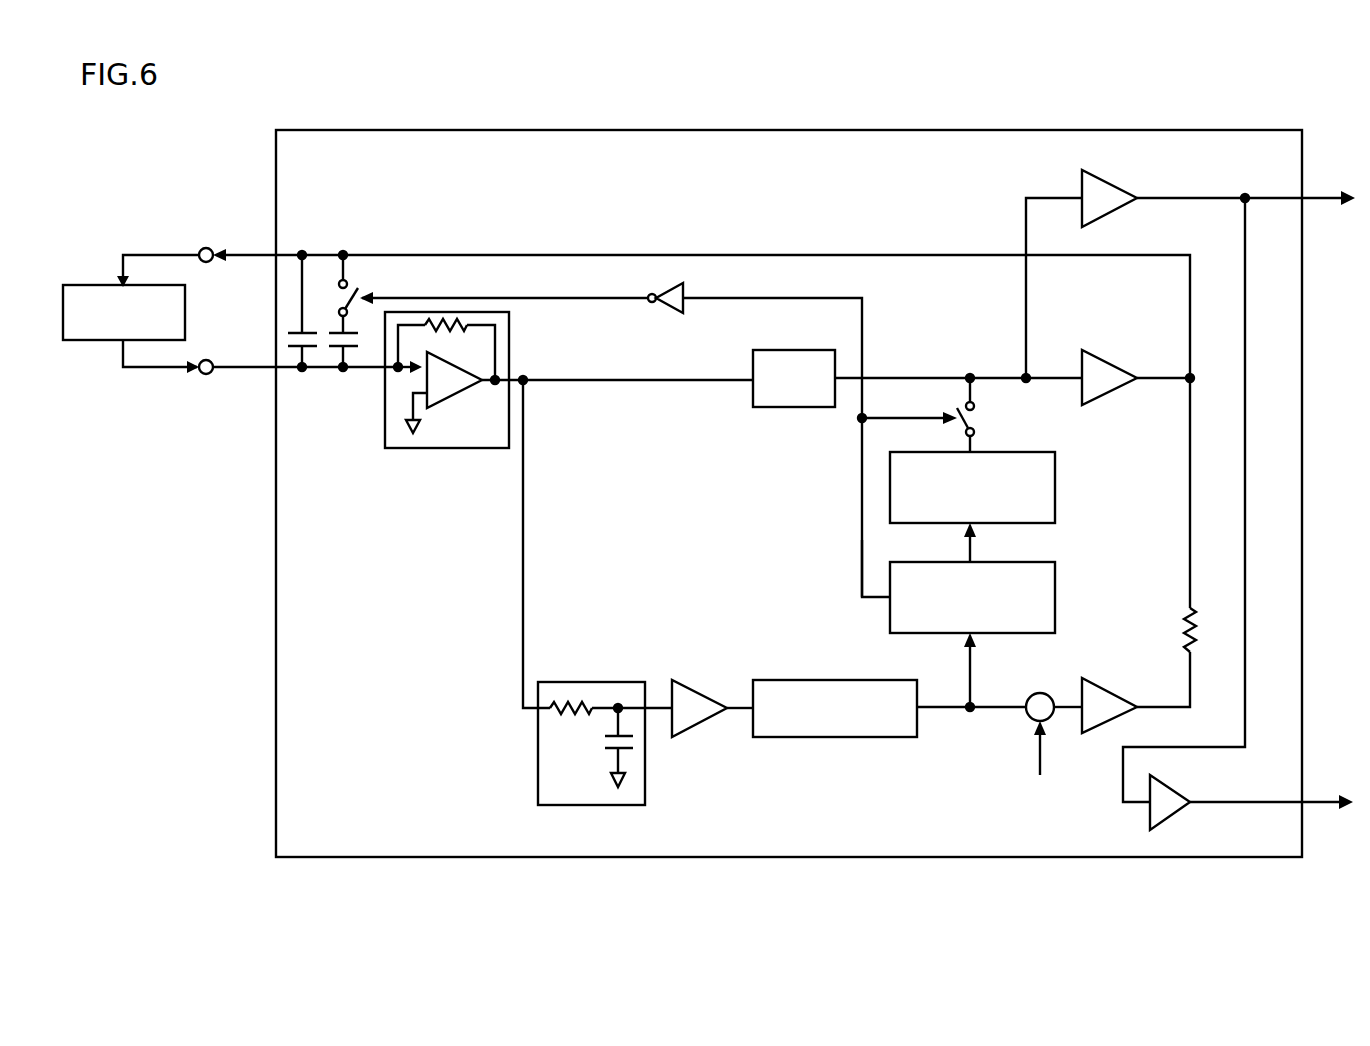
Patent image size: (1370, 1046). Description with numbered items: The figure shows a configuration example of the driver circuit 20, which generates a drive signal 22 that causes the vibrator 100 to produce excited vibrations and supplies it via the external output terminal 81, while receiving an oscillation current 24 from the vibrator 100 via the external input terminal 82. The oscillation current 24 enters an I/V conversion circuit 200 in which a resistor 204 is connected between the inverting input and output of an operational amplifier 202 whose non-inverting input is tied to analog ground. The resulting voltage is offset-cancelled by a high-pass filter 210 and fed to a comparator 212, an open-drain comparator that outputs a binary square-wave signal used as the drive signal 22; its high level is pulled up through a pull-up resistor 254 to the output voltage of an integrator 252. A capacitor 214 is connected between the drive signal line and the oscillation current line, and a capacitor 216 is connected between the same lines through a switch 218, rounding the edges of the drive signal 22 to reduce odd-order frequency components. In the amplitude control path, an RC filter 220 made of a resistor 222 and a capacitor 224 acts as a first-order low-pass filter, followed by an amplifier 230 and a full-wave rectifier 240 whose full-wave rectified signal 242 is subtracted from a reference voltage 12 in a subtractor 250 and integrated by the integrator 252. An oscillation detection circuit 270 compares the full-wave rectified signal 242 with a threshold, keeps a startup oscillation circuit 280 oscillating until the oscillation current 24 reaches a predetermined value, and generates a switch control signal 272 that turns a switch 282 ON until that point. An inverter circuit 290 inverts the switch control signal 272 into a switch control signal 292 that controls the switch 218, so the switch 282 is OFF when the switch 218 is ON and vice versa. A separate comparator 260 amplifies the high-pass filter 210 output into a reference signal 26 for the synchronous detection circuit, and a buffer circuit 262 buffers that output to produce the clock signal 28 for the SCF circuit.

The reference voltage 12 is at (1042, 757).
The driver circuit 20 is at (1115, 130).
The drive signal 22 is at (255, 255).
The oscillation current 24 is at (255, 366).
The reference signal 26 is at (1313, 198).
The clock signal 28 is at (1313, 802).
The external output terminal 81 is at (205, 248).
The external input terminal 82 is at (208, 360).
The vibrator 100 is at (186, 313).
The I/V conversion circuit 200 is at (628, 380).
The operational amplifier 202 is at (452, 395).
The resistor 204 is at (467, 330).
The high-pass filter 210 is at (805, 350).
The comparator 212 is at (1105, 356).
The capacitor 214 is at (312, 352).
The capacitor 216 is at (353, 352).
The switch 218 is at (356, 294).
The RC filter 220 is at (617, 592).
The resistor 222 is at (576, 716).
The capacitor 224 is at (604, 750).
The amplifier 230 is at (706, 694).
The full-wave rectifier 240 is at (876, 680).
The full-wave rectified signal 242 is at (943, 706).
The subtractor 250 is at (1040, 692).
The integrator 252 is at (1106, 688).
The pull-up resistor 254 is at (1183, 632).
The comparator 260 is at (1105, 178).
The buffer circuit 262 is at (1179, 782).
The oscillation detection circuit 270 is at (1012, 562).
The switch control signal 272 is at (860, 540).
The startup oscillation circuit 280 is at (1012, 452).
The switch 282 is at (958, 412).
The inverter circuit 290 is at (667, 313).
The switch control signal 292 is at (598, 300).